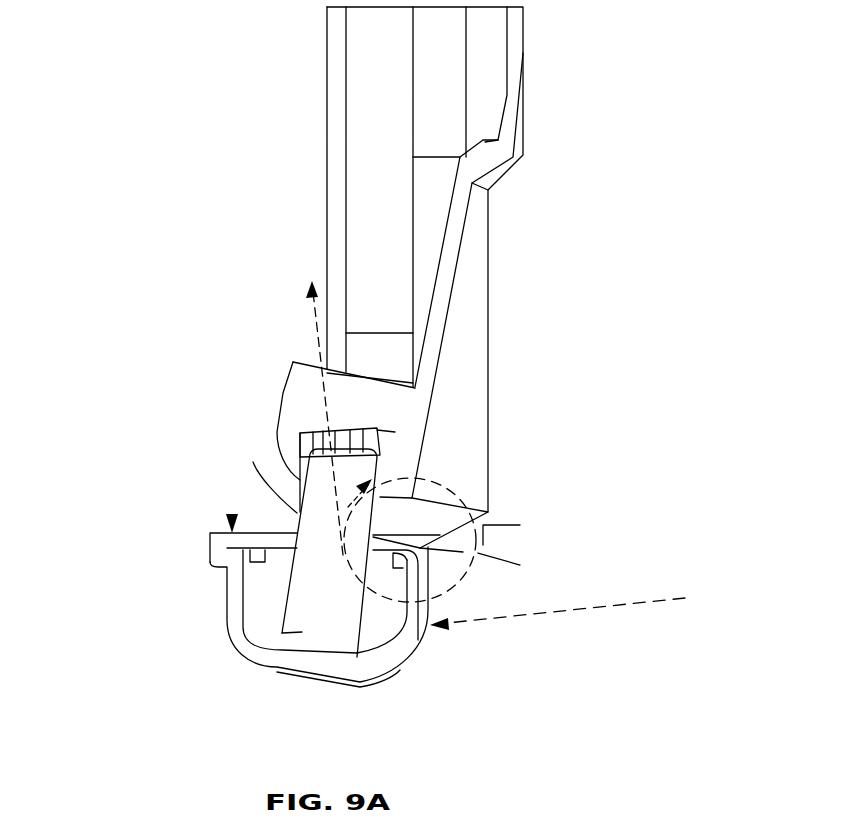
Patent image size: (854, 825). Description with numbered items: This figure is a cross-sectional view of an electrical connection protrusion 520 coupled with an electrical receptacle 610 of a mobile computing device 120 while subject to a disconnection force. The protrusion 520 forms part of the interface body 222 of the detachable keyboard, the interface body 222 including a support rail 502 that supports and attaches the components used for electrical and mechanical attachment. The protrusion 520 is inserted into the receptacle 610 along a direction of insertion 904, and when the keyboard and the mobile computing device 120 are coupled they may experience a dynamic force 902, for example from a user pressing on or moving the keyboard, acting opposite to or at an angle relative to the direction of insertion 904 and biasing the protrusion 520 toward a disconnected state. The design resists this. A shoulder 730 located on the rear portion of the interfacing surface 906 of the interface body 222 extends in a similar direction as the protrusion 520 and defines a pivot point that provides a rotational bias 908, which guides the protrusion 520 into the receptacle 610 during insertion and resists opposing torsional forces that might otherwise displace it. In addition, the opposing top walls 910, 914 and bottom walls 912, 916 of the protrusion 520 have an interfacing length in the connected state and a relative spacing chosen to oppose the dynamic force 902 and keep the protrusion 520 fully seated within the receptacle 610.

The mobile computing device 120 is at (483, 300).
The electrical receptacle 610 is at (302, 395).
The top wall 910 is at (297, 440).
The top wall 914 is at (305, 478).
The bottom wall 912 is at (370, 437).
The bottom wall 916 is at (370, 483).
The direction of insertion 904 is at (322, 332).
The interfacing surface 906 is at (232, 516).
The interface body 222 is at (165, 546).
The support rail 502 is at (227, 605).
The electrical connection protrusion 520 is at (282, 633).
The rotational bias 908 is at (483, 525).
The shoulder 730 is at (463, 552).
The dynamic force 902 is at (617, 605).